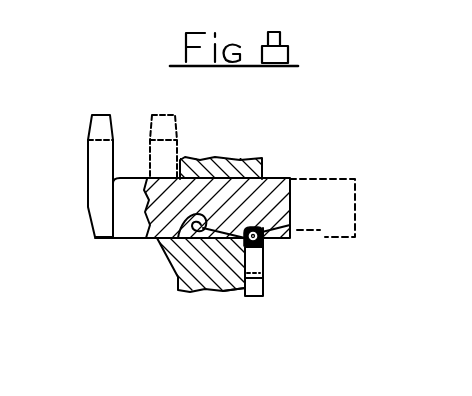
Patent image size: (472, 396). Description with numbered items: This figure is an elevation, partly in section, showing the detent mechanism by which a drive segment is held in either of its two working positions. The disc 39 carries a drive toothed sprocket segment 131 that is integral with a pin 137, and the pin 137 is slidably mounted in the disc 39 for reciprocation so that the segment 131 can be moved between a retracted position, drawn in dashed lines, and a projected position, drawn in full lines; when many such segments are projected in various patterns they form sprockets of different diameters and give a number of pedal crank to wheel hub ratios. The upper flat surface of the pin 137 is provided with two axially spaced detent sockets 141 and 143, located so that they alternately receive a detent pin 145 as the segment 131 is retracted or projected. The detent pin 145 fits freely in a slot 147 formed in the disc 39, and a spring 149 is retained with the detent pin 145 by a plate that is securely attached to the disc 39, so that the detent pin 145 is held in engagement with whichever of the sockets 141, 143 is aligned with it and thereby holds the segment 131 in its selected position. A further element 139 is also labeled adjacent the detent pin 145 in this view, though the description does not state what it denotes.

The disc 39 is at (207, 165).
The drive toothed sprocket segment 131 is at (93, 158).
The pin 137 is at (280, 182).
The pivot pin 139 is at (290, 238).
The detent socket 141 is at (160, 248).
The detent socket 143 is at (283, 229).
The pin 145 is at (268, 244).
The slot 147 is at (245, 270).
The spring 149 is at (262, 270).